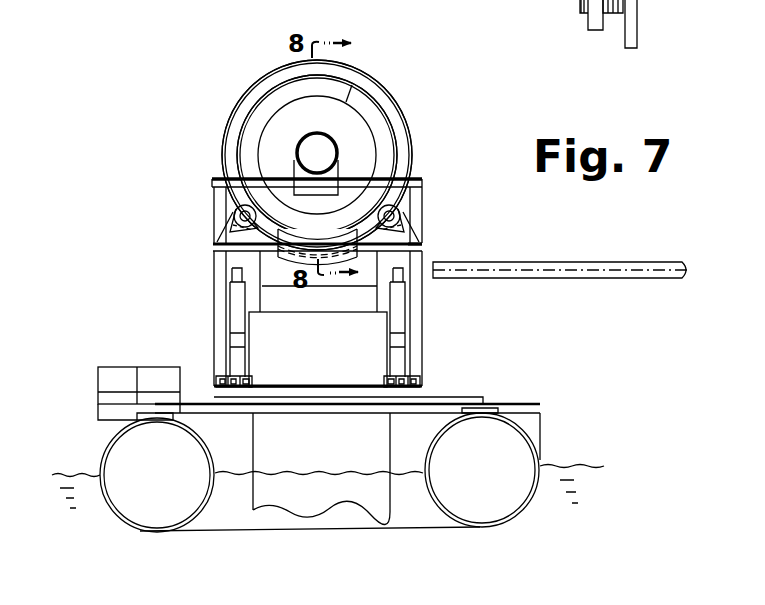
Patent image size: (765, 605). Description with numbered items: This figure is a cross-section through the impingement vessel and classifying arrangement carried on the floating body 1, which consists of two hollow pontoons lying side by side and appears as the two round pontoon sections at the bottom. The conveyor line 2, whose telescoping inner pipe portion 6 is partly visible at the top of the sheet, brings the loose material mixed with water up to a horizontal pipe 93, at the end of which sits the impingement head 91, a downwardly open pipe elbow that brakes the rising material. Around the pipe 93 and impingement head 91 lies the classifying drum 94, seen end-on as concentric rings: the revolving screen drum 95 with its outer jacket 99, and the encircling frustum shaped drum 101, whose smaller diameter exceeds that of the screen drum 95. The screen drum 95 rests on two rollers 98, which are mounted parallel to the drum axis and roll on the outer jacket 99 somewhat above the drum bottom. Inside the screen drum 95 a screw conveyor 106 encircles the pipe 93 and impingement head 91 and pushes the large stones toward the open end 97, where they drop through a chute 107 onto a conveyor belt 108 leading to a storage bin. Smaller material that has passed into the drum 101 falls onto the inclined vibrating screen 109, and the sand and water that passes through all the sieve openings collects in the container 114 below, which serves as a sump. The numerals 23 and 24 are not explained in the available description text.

The floating body 1 is at (100, 462).
The impingement head 91 is at (300, 174).
The horizontal pipe 93 is at (316, 133).
The classifying drum 94 is at (404, 98).
The screen drum 95 is at (287, 83).
The open end 97 is at (272, 100).
The rollers 98 is at (237, 208).
The outer jacket 99 is at (238, 137).
The frustum shaped drum 101 is at (370, 73).
The screw conveyor 106 is at (382, 140).
The chute 107 is at (290, 254).
The conveyor belt 108 is at (536, 265).
The inclined vibrating screen 109 is at (385, 262).
The container 114 is at (333, 352).
The conveyor line 2 is at (487, 8).
The inner pipe portion 6 is at (600, 24).
The pipe 23 is at (637, 25).
The pipe 24 is at (695, 8).